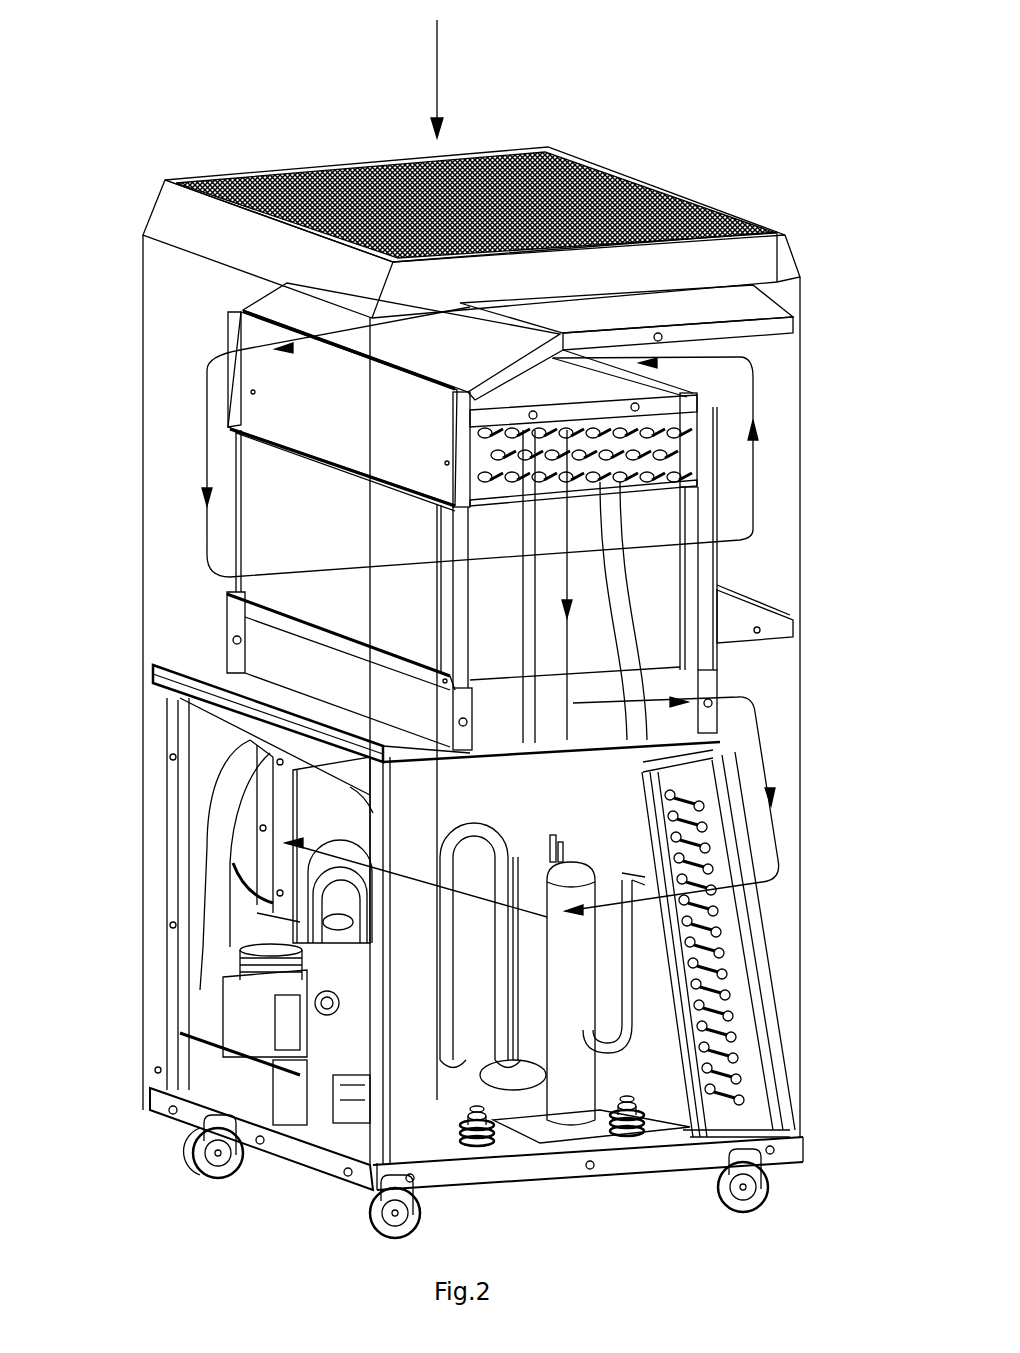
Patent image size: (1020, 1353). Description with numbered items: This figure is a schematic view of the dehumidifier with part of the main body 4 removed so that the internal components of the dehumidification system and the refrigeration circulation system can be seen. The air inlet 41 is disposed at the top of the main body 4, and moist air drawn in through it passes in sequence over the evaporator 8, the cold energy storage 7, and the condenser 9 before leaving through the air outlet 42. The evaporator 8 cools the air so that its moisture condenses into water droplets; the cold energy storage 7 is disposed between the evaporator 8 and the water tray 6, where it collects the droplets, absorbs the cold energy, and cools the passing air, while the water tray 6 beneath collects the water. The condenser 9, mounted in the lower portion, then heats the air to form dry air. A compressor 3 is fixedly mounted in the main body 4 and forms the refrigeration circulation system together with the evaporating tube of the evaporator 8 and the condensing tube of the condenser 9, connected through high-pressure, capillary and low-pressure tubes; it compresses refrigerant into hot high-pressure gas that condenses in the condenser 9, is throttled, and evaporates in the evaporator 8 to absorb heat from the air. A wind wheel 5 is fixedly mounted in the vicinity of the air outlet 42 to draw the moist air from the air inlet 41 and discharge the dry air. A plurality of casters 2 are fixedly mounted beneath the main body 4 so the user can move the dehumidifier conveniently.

The casters 2 is at (200, 1153).
The compressor 3 is at (563, 952).
The main body 4 is at (157, 1002).
The wind wheel 5 is at (317, 832).
The water tray 6 is at (643, 760).
The cold energy storage 7 is at (667, 565).
The evaporator 8 is at (687, 471).
The condenser 9 is at (707, 1000).
The air inlet 41 is at (257, 172).
The air outlet 42 is at (263, 808).